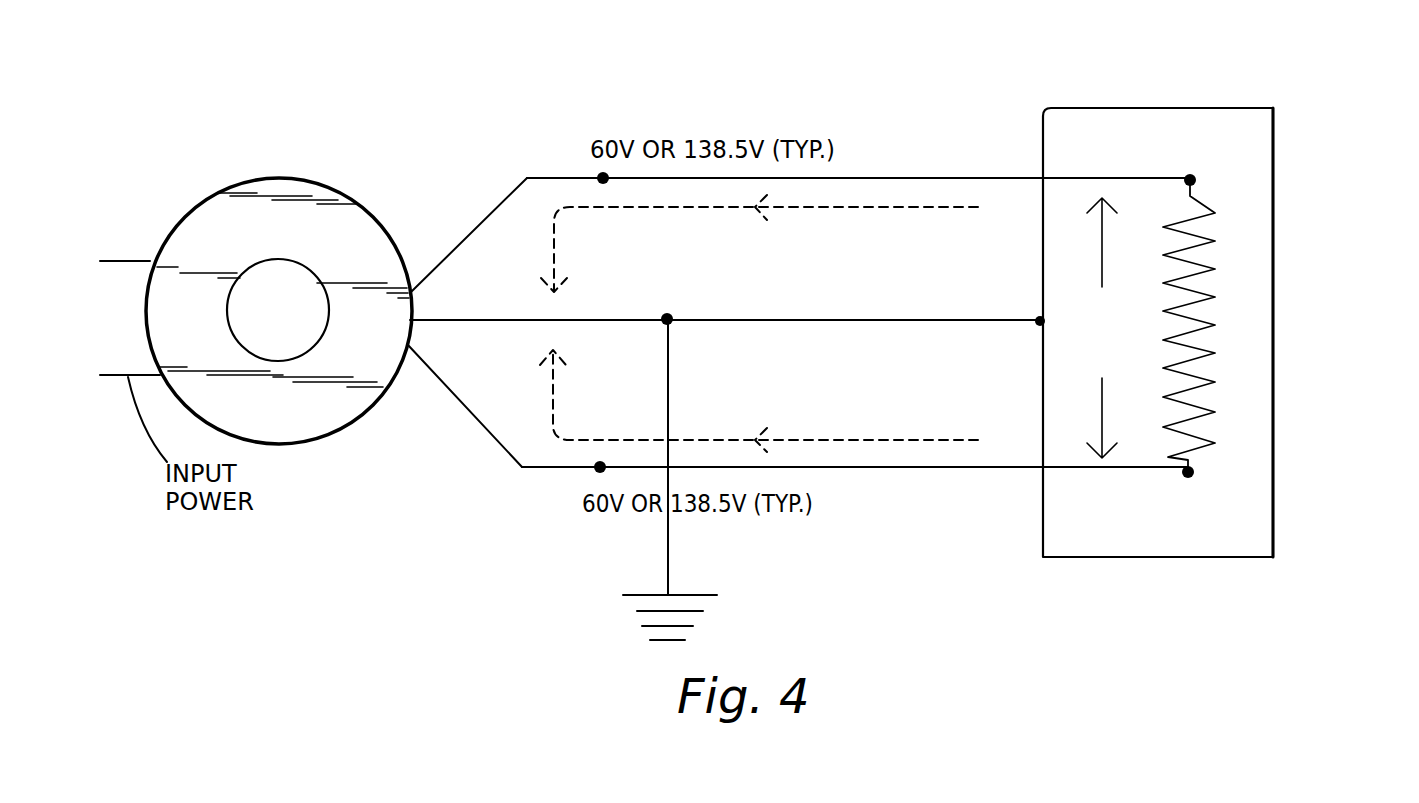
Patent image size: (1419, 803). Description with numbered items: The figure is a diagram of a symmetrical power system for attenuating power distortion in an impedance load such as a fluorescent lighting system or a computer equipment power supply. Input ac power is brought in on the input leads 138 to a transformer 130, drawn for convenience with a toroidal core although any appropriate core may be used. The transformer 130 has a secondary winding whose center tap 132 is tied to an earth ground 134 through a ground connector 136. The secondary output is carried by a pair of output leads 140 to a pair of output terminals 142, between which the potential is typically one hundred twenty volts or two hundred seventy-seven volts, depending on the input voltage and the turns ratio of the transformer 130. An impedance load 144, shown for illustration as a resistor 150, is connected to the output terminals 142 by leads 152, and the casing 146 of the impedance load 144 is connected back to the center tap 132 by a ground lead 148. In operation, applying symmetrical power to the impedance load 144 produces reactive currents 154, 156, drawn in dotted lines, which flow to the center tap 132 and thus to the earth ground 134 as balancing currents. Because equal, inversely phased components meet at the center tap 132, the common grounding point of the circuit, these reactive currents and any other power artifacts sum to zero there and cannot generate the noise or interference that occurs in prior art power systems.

The transformer 130 is at (323, 185).
The center tap 132 is at (668, 319).
The earth ground 134 is at (705, 595).
The ground connector 136 is at (668, 565).
The input leads 138 is at (115, 260).
The output leads 140 is at (472, 232).
The output terminals 142 is at (598, 468).
The impedance load 144 is at (1228, 294).
The casing 146 is at (1133, 108).
The ground lead 148 is at (925, 320).
The resistor 150 is at (1212, 412).
The leads 152 is at (890, 179).
The reactive current 154 is at (940, 207).
The reactive current 156 is at (877, 440).